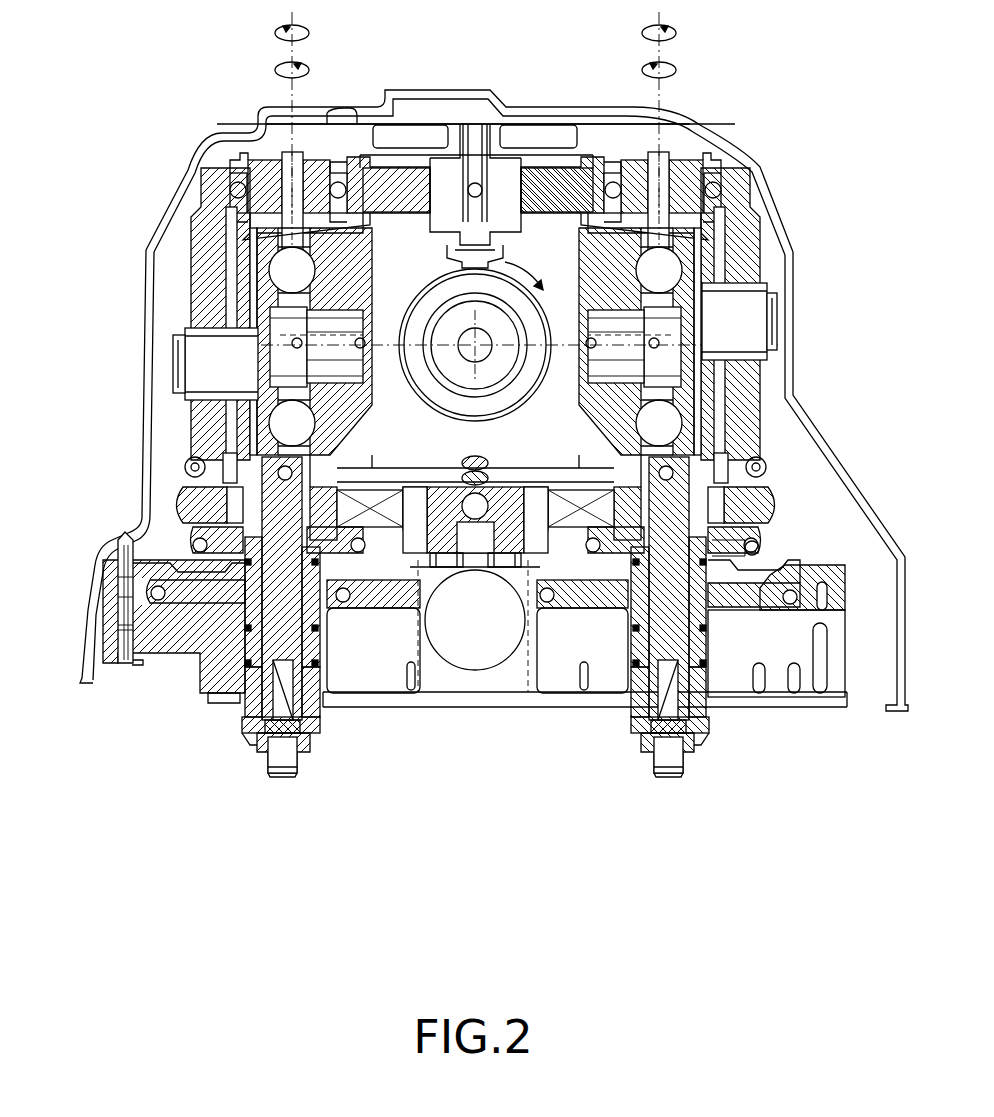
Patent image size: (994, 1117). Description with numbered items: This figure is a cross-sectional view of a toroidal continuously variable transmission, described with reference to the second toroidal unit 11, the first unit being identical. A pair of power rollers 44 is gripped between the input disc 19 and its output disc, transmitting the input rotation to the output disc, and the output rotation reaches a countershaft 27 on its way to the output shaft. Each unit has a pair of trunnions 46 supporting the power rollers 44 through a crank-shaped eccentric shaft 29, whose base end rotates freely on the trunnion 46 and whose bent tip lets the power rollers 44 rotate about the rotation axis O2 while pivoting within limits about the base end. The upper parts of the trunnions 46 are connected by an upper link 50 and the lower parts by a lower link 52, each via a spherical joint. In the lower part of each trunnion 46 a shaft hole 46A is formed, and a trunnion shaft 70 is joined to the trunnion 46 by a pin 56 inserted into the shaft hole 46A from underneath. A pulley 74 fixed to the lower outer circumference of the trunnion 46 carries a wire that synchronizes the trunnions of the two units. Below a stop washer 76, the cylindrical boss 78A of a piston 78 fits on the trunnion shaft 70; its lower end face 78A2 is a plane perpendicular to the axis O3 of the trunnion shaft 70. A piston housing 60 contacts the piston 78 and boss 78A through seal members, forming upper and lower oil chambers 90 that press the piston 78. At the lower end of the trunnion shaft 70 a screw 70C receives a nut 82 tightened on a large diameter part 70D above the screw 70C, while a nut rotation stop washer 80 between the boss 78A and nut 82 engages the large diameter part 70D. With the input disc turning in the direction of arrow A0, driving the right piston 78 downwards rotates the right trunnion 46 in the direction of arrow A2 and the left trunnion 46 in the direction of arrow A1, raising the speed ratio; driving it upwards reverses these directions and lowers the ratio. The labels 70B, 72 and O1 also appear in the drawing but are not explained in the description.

The second toroidal unit 11 is at (531, 72).
The input disc 19 is at (398, 227).
The countershaft 27 is at (467, 662).
The eccentric shaft 29 is at (193, 362).
The power rollers 44 is at (360, 187).
The trunnion 46 is at (207, 240).
The shaft hole 46A is at (370, 482).
The upper link 50 is at (217, 173).
The lower link 52 is at (765, 498).
The pin 56 is at (348, 433).
The piston housing 60 is at (126, 650).
The trunnion shaft 70 is at (250, 515).
The shaft lower portion 70B is at (250, 655).
The screw 70C is at (290, 778).
The large diameter part 70D is at (293, 720).
The seal ring 72 is at (760, 549).
The pulley 74 is at (245, 558).
The stop washer 76 is at (463, 462).
The piston 78 is at (193, 597).
The cylindrical boss 78A is at (247, 607).
The lower end face 78A2 is at (253, 740).
The nut rotation stop washer 80 is at (327, 730).
The nut 82 is at (307, 750).
The oil chambers 90 is at (360, 612).
The arrow A0 is at (538, 289).
The arrow A1 is at (283, 70).
The arrow A2 is at (283, 31).
The center axis O1 is at (470, 343).
The rotation axis O2 is at (366, 340).
The axis of the trunnion shaft O3 is at (285, 93).